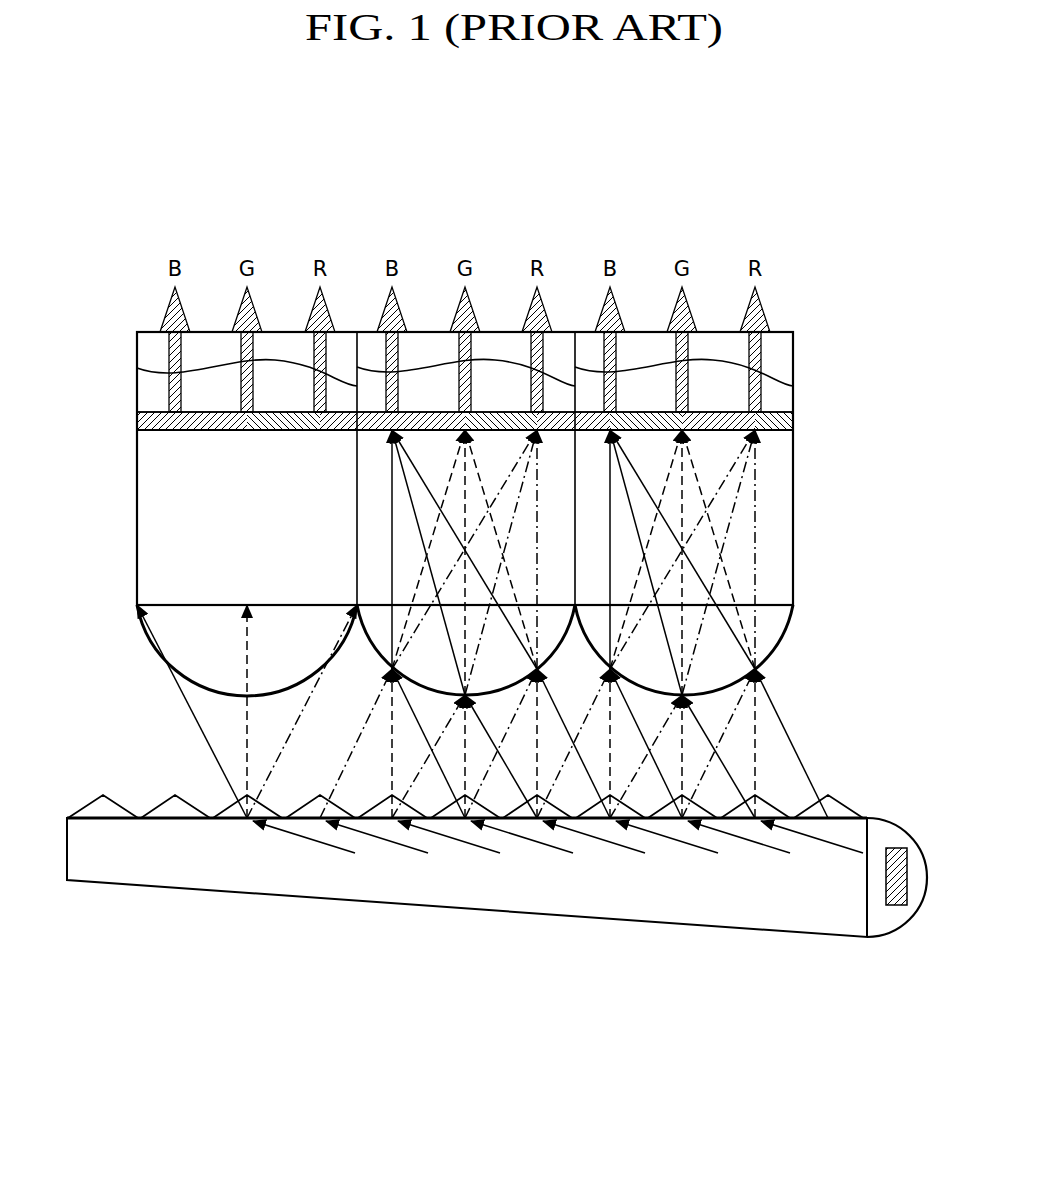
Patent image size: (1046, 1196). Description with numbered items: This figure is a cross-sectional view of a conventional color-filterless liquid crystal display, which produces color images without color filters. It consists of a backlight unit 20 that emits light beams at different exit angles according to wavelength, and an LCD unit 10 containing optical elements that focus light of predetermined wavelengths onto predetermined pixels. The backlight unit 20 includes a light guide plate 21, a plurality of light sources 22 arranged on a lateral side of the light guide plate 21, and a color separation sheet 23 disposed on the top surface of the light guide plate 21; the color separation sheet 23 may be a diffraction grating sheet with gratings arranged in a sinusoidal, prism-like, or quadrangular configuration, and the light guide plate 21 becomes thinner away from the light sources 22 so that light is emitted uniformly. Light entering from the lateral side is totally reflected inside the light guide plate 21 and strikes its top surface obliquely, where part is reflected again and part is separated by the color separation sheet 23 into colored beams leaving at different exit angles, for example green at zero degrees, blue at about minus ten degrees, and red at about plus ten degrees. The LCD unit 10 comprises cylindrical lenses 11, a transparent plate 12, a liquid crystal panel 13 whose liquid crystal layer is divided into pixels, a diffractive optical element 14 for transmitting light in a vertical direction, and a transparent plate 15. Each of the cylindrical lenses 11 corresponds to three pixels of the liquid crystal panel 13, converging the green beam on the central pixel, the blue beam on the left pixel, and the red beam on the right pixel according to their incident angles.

The LCD unit 10 is at (525, 491).
The cylindrical lenses 11 is at (500, 650).
The transparent plate 12 is at (793, 519).
The liquid crystal panel 13 is at (793, 419).
The diffractive optical element 14 is at (793, 399).
The transparent plate 15 is at (793, 356).
The backlight unit 20 is at (497, 926).
The light guide plate 21 is at (760, 903).
The light sources 22 is at (886, 932).
The color separation sheet 23 is at (837, 807).